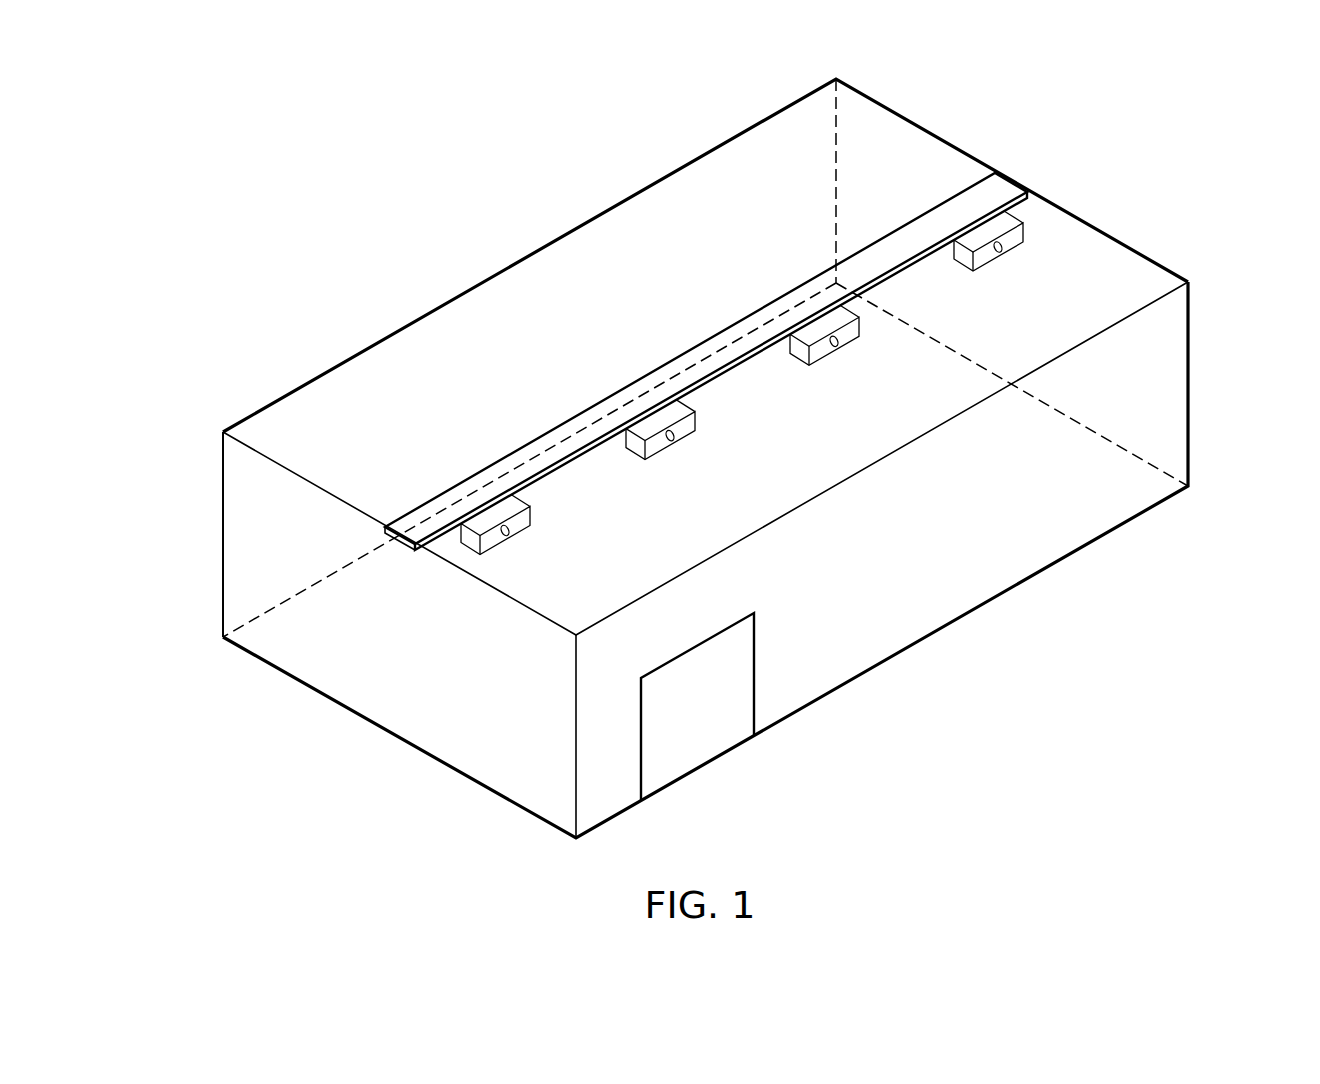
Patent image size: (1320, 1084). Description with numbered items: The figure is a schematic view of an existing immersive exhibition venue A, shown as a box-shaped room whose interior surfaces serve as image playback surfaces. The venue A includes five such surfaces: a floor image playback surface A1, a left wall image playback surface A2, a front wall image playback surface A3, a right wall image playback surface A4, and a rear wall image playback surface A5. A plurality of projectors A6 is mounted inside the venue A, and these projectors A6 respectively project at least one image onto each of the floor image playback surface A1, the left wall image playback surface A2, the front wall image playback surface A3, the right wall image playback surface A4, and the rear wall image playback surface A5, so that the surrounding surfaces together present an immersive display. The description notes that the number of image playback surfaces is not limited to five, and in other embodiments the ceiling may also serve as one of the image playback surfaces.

The immersive exhibition venue A is at (390, 236).
The floor image playback surface A1 is at (888, 632).
The left wall image playback surface A2 is at (608, 257).
The front wall image playback surface A3 is at (922, 160).
The right wall image playback surface A4 is at (1157, 378).
The rear wall image playback surface A5 is at (240, 540).
The projectors A6 is at (1008, 222).